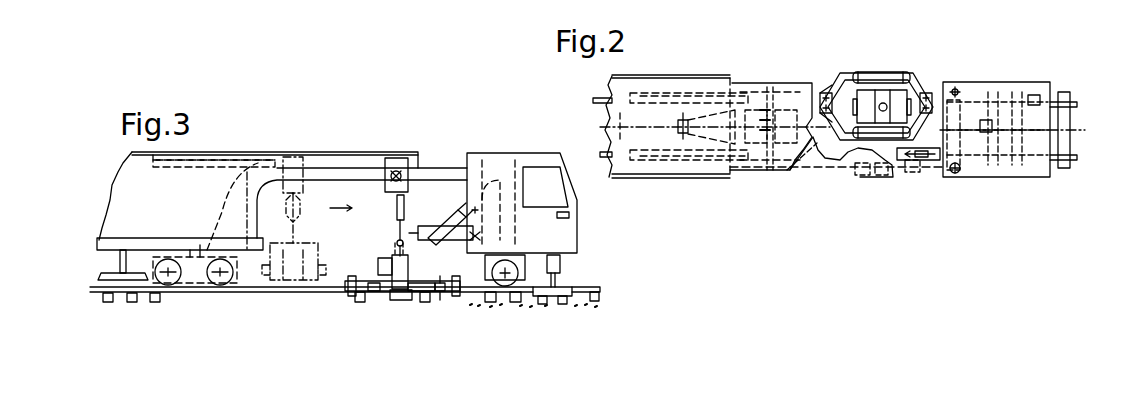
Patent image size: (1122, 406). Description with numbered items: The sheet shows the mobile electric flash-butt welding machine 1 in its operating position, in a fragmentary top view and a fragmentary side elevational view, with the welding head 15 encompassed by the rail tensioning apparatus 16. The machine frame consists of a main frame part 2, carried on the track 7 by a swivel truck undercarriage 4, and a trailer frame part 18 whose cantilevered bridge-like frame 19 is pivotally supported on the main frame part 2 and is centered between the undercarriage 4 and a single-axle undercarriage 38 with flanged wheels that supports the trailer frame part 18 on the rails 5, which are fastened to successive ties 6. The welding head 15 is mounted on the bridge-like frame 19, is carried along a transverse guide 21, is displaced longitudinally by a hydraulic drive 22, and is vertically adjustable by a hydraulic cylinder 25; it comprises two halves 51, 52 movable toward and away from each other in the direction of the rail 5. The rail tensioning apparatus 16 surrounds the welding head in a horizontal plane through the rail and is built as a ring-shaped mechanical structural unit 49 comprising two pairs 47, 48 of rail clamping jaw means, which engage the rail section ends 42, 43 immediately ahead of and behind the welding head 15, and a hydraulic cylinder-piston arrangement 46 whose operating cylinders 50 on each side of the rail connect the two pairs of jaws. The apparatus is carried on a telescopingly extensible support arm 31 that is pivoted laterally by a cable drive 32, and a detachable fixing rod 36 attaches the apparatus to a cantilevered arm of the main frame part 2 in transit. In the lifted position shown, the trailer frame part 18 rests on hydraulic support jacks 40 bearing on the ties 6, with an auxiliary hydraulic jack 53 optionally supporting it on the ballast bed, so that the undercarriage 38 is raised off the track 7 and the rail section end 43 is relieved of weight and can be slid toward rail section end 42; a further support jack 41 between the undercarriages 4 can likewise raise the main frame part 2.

In FIG. 3, the mobile electric flash-butt welding machine 1 is at (353, 147).
In FIG. 2, the mobile electric flash-butt welding machine 1 is at (793, 77).
In FIG. 3, the main frame part 2 is at (135, 162).
In FIG. 2, the main frame part 2 is at (612, 88).
In FIG. 3, the undercarriage 4 is at (198, 270).
In FIG. 2, the rail 5 is at (1073, 157).
In FIG. 3, the ties 6 is at (133, 298).
In FIG. 2, the ties 6 is at (1067, 122).
In FIG. 3, the track 7 is at (601, 287).
In FIG. 2, the track 7 is at (1077, 99).
In FIG. 3, the flash-butt welding head 15 is at (376, 262).
In FIG. 2, the flash-butt welding head 15 is at (758, 147).
In FIG. 3, the rail tensioning apparatus 16 is at (447, 278).
In FIG. 2, the rail tensioning apparatus 16 is at (933, 79).
In FIG. 3, the trailer frame part 18 is at (492, 163).
In FIG. 2, the trailer frame part 18 is at (1003, 92).
In FIG. 3, the bridge-like frame 19 is at (447, 163).
In FIG. 2, the bridge-like frame 19 is at (692, 122).
In FIG. 2, the transverse guide 21 is at (775, 152).
In FIG. 3, the longitudinal hydraulic drive 22 is at (190, 162).
In FIG. 2, the longitudinal hydraulic drive 22 is at (668, 160).
In FIG. 3, the hydraulic cylinder 25 is at (397, 206).
In FIG. 3, the support arm 31 is at (420, 228).
In FIG. 2, the support arm 31 is at (923, 161).
In FIG. 2, the cable drive 32 is at (960, 168).
In FIG. 2, the fixing rod 36 is at (808, 153).
In FIG. 3, the undercarriage 38 is at (507, 286).
In FIG. 3, the hydraulic support jack 40 is at (565, 287).
In FIG. 3, the support jack 41 is at (125, 274).
In FIG. 3, the rail section end 42 is at (313, 290).
In FIG. 3, the rail section end 43 is at (473, 294).
In FIG. 2, the hydraulic cylinder-piston arrangement 46 is at (893, 73).
In FIG. 2, the pair of rail clamping jaw means 47 is at (827, 86).
In FIG. 2, the pair of rail clamping jaw means 48 is at (915, 92).
In FIG. 2, the ring-shaped mechanical structural unit 49 is at (879, 150).
In FIG. 3, the operating cylinder 50 is at (413, 297).
In FIG. 2, the operating cylinder 50 is at (887, 70).
In FIG. 2, the welding head half 51 is at (853, 80).
In FIG. 2, the welding head half 52 is at (890, 93).
In FIG. 3, the auxiliary hydraulic jack 53 is at (553, 300).